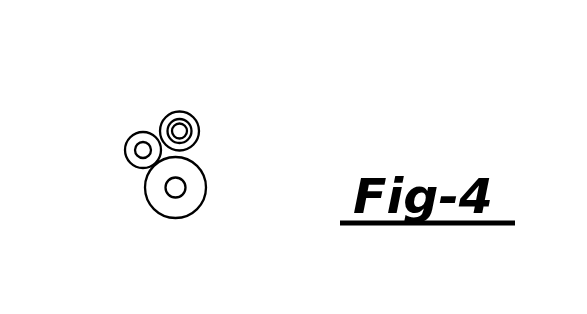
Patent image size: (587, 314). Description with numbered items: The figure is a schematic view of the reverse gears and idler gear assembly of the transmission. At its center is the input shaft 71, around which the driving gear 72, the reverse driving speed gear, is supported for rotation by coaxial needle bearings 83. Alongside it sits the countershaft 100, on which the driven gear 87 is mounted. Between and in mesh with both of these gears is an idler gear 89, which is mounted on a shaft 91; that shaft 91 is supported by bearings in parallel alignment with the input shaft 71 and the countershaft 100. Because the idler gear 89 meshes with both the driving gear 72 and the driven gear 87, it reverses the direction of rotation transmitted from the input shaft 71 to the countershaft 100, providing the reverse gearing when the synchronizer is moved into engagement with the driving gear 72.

The input shaft 71 is at (180, 126).
The driving gear 72 is at (200, 131).
The needle bearings 83 is at (168, 122).
The driven gear 87 is at (192, 200).
The idler gear 89 is at (128, 163).
The shaft 91 is at (142, 148).
The countershaft 100 is at (173, 192).